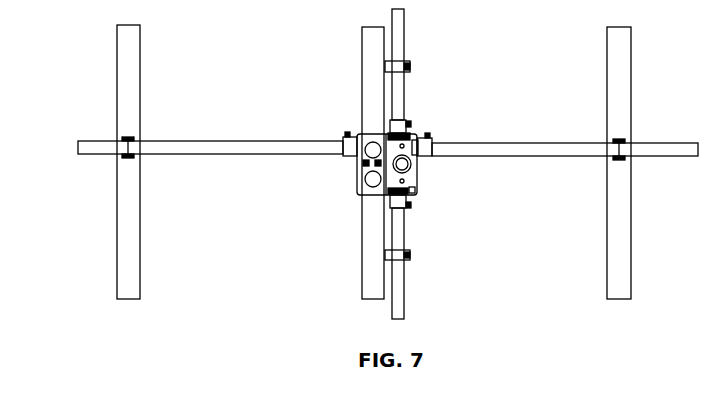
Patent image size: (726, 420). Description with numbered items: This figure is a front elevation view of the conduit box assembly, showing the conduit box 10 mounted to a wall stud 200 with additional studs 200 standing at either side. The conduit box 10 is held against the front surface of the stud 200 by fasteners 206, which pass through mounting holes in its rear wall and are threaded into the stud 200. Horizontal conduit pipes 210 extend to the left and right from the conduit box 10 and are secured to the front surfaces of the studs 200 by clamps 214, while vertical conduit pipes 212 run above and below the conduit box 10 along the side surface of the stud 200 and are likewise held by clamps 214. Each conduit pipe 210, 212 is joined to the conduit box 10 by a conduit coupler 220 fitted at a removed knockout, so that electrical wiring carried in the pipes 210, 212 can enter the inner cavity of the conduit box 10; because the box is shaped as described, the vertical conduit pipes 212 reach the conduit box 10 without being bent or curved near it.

The conduit box 10 is at (418, 133).
The wall stud 200 is at (128, 80).
The fasteners 206 is at (378, 168).
The horizontal conduit pipes 210 is at (246, 139).
The vertical conduit pipes 212 is at (405, 27).
The clamps 214 is at (410, 66).
The conduit coupler 220 is at (350, 132).